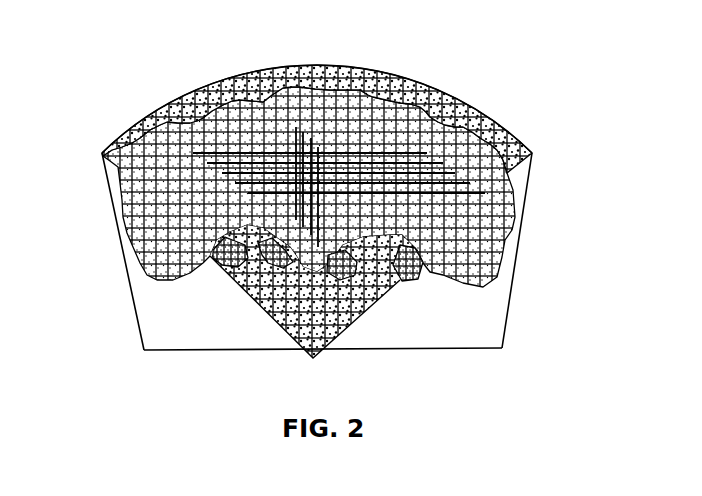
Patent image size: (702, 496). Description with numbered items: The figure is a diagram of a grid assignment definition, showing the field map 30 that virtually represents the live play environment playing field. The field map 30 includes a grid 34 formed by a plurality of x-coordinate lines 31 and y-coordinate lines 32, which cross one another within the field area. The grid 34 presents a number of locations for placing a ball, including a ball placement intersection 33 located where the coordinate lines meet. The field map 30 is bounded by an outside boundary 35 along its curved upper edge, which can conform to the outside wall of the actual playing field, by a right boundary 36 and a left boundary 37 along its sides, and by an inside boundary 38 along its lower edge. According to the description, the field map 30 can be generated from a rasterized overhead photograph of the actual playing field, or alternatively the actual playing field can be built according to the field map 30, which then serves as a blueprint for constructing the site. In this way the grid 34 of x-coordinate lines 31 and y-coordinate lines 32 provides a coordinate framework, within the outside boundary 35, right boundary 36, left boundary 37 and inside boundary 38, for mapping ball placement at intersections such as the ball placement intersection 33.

The field map 30 is at (71, 94).
The x-coordinate lines 31 is at (297, 127).
The y-coordinate lines 32 is at (397, 153).
The ball placement intersection 33 is at (295, 153).
The grid 34 is at (297, 170).
The outside boundary 35 is at (352, 67).
The right boundary 36 is at (508, 305).
The left boundary 37 is at (132, 300).
The inside boundary 38 is at (388, 349).